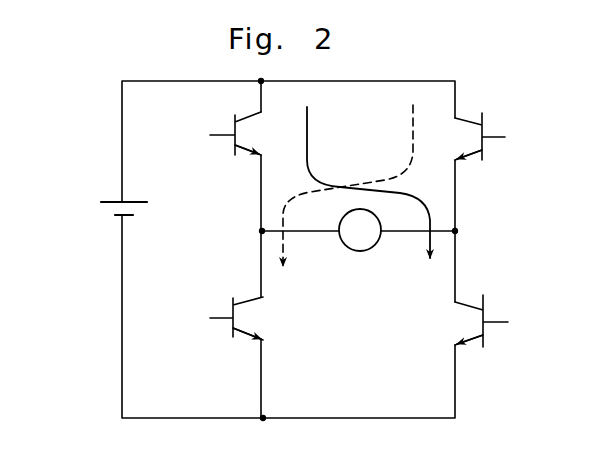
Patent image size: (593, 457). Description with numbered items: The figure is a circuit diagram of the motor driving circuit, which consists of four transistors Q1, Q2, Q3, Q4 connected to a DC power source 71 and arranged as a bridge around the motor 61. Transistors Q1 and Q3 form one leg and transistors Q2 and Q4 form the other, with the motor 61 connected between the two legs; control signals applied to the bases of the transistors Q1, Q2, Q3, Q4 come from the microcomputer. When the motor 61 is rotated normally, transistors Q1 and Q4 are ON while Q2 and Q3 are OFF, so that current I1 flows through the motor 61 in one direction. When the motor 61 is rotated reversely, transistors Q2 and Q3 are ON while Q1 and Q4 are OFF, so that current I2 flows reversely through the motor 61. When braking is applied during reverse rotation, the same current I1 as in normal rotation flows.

The DC power source 71 is at (112, 195).
The motor 61 is at (358, 252).
The transistor Q1 is at (247, 133).
The transistor Q2 is at (466, 136).
The transistor Q3 is at (247, 318).
The transistor Q4 is at (465, 321).
The current I1 is at (368, 182).
The current I2 is at (348, 185).